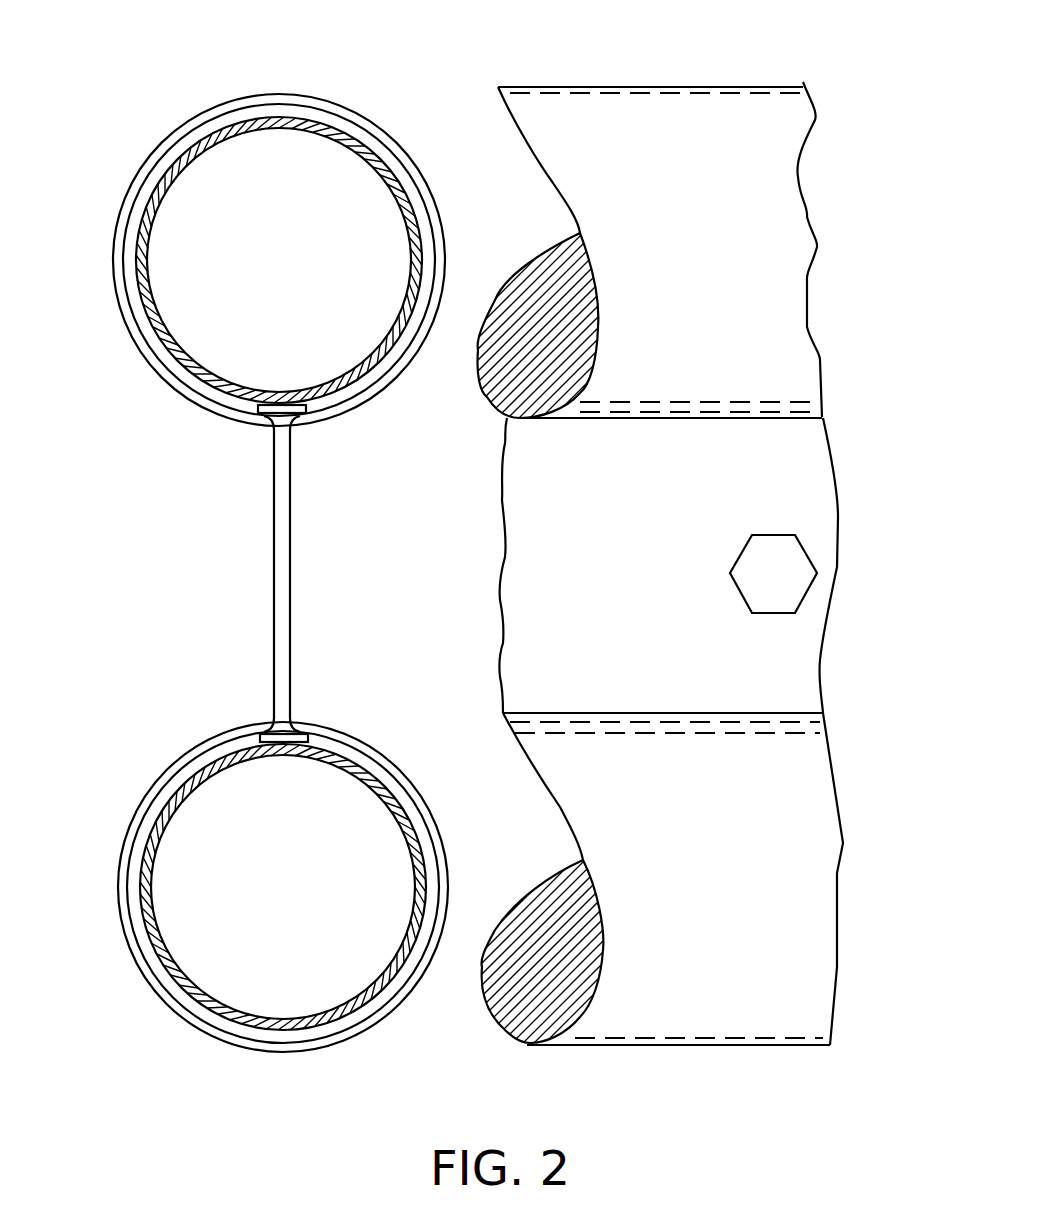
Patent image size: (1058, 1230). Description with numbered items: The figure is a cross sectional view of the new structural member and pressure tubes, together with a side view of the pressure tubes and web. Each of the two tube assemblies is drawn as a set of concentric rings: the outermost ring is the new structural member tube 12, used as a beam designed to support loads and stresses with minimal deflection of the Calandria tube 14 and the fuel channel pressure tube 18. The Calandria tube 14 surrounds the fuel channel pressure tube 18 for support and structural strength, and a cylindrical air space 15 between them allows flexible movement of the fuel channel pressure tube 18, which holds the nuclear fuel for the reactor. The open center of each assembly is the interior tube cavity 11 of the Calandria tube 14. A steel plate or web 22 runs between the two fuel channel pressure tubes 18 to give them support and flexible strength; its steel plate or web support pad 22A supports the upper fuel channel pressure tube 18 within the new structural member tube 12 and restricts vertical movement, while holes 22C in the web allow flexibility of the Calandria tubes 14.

The interior tube cavity 11 is at (300, 262).
The new structural member tube 12 is at (150, 152).
The Calandria tube 14 is at (115, 240).
The cylindrical air space 15 is at (135, 298).
The fuel channel pressure tube 18 is at (288, 107).
The steel plate or web 22 is at (288, 530).
The steel plate or web support pad 22A is at (277, 413).
The holes in steel plate or web 22C is at (792, 585).